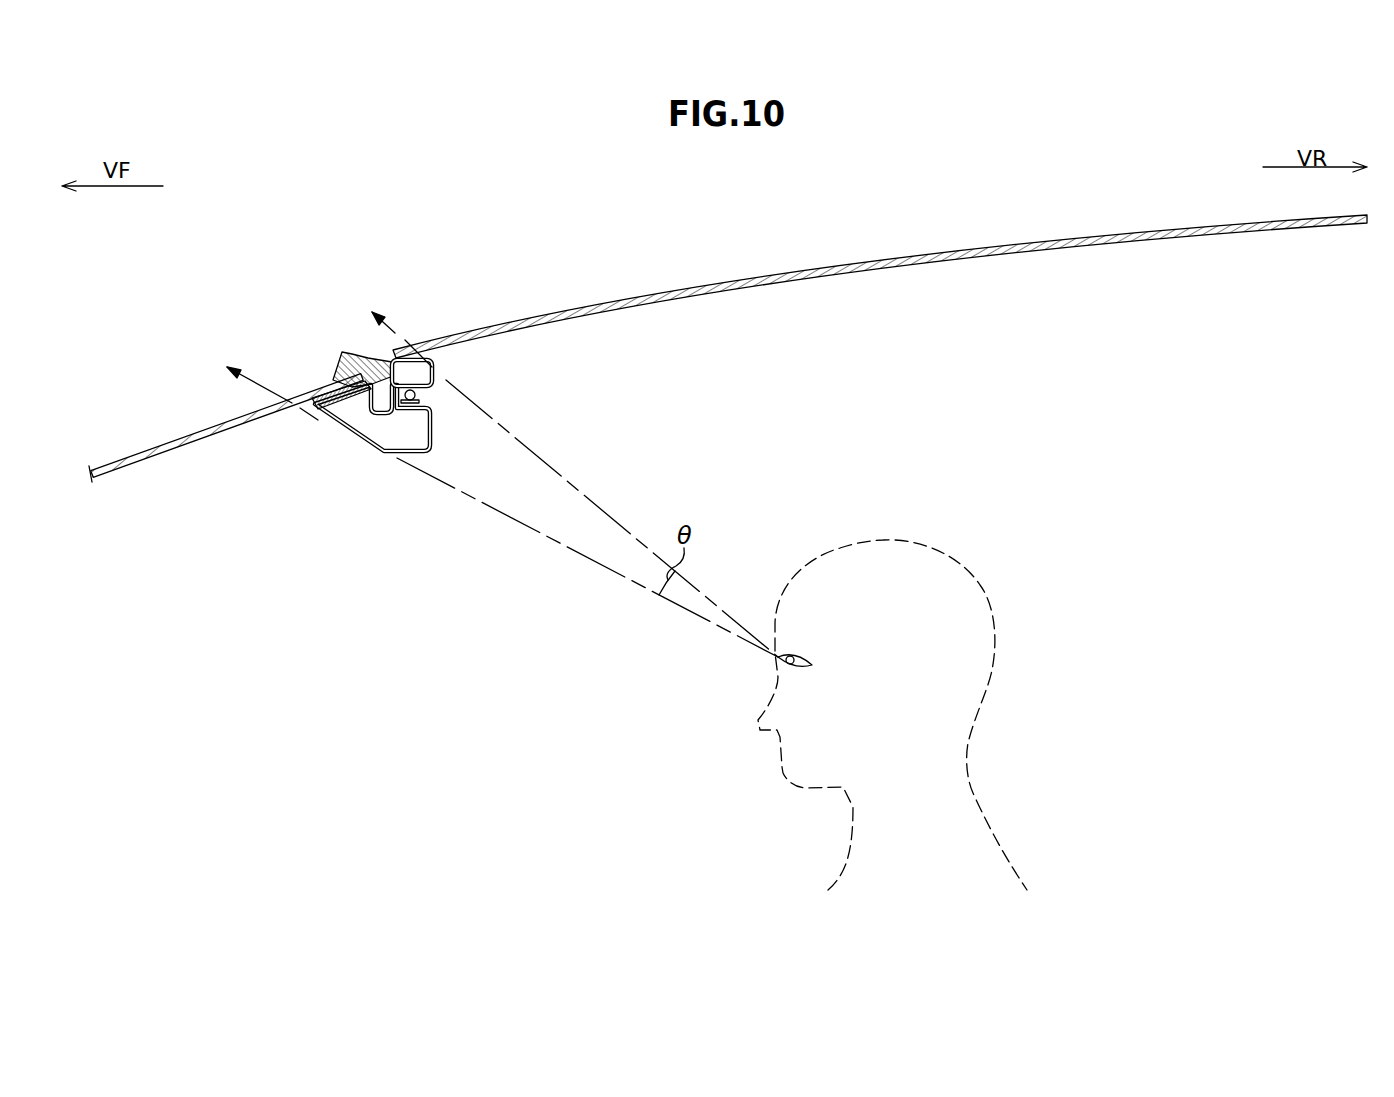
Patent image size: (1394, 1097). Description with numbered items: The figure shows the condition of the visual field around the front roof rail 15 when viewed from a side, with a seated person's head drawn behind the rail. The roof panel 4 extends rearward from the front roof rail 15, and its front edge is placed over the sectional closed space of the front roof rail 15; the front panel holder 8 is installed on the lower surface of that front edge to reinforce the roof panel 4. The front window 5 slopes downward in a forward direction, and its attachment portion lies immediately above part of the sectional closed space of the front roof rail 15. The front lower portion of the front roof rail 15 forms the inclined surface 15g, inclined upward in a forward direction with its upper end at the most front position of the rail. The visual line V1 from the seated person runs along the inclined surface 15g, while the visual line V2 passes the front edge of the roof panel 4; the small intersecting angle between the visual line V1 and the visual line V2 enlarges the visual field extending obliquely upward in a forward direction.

The roof panel 4 is at (906, 255).
The front window 5 is at (203, 429).
The front panel holder 8 is at (447, 395).
The front roof rail 15 is at (350, 438).
The inclined surface 15g is at (365, 446).
The visual line V1 is at (597, 563).
The visual line V2 is at (608, 511).